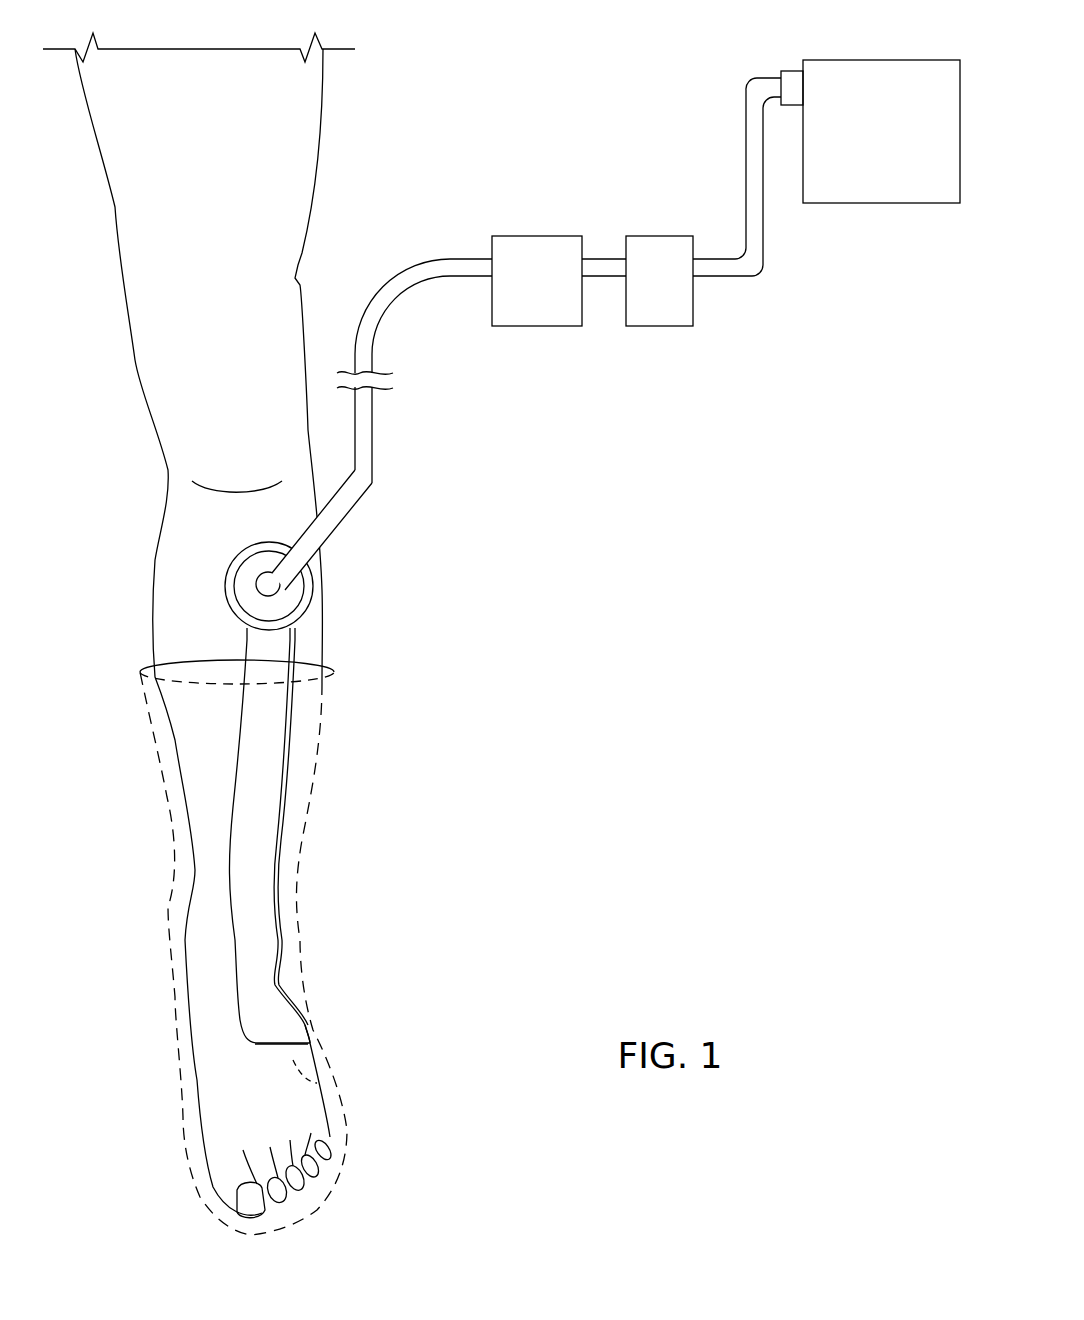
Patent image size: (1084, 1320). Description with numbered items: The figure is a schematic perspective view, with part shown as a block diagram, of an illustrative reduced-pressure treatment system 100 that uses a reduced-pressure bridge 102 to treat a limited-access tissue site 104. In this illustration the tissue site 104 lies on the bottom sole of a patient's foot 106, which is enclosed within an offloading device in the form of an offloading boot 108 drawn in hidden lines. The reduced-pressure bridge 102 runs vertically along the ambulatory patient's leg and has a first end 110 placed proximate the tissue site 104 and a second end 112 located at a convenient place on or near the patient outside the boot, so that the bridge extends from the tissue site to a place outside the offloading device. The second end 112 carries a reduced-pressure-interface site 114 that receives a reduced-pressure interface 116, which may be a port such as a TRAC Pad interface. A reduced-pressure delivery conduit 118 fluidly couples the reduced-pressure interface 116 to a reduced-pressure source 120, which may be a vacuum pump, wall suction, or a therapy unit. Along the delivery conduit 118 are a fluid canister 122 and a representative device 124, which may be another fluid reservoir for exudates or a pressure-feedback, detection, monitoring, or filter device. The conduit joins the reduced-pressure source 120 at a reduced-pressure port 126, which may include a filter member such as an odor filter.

The reduced-pressure treatment system 100 is at (478, 567).
The reduced-pressure bridge 102 is at (258, 830).
The tissue site 104 is at (320, 1045).
The patient's foot 106 is at (333, 1073).
The offloading boot 108 is at (182, 1132).
The first end 110 is at (275, 1047).
The second end 112 is at (313, 568).
The reduced-pressure-interface site 114 is at (250, 568).
The reduced-pressure interface 116 is at (253, 555).
The reduced-pressure delivery conduit 118 is at (421, 268).
The reduced-pressure source 120 is at (883, 58).
The fluid canister 122 is at (662, 236).
The representative device 124 is at (540, 236).
The reduced-pressure port 126 is at (793, 70).